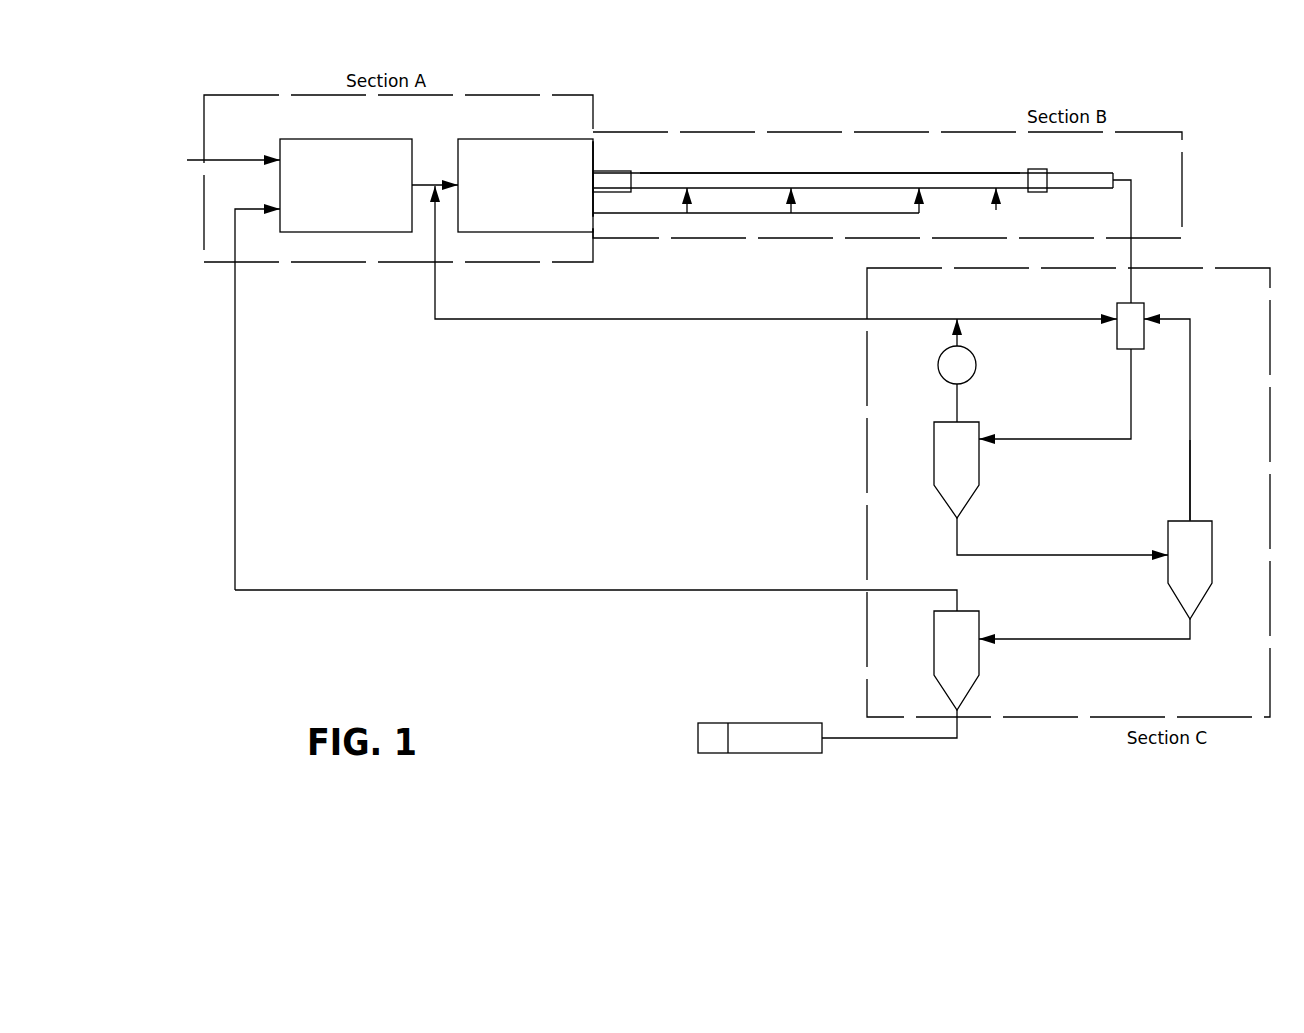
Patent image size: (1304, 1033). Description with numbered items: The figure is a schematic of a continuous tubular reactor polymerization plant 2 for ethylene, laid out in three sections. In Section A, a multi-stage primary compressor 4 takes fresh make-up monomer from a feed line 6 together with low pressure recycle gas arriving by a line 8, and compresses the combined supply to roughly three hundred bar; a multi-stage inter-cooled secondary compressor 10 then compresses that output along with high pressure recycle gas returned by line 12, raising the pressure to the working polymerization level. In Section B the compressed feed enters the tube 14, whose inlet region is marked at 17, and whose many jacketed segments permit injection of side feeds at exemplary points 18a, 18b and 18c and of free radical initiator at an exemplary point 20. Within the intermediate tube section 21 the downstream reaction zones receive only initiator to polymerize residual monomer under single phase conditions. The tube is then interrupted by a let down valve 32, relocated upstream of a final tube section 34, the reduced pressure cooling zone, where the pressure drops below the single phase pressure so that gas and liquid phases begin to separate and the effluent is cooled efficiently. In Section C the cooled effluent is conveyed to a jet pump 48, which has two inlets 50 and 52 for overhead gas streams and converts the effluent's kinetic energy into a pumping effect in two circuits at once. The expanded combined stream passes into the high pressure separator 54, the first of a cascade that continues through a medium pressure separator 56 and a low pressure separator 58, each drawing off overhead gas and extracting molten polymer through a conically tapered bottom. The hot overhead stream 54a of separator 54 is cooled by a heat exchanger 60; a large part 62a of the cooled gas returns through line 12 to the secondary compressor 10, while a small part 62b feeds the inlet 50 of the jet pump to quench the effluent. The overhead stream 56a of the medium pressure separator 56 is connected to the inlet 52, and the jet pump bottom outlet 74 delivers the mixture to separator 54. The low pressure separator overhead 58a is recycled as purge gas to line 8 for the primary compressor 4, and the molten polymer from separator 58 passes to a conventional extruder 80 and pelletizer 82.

The continuous tubular reactor polymerization plant 2 is at (821, 122).
The multi-stage primary compressor 4 is at (340, 195).
The feed line 6 is at (232, 158).
The line 8 is at (238, 344).
The multi-stage inter-cooled secondary compressor 10 is at (514, 195).
The line 12 is at (489, 322).
The tube 14 is at (720, 172).
The conduit inlet section 17 is at (613, 170).
The side feed injection point 18a is at (688, 206).
The side feed injection point 18b is at (792, 206).
The side feed injection point 18c is at (921, 206).
The free radical initiator injection point 20 is at (999, 206).
The intermediate tube section 21 is at (906, 171).
The let down valve 32 is at (1039, 169).
The final tube section 34 is at (1106, 171).
The jet pump 48 is at (1146, 304).
The jet pump inlet 50 is at (1035, 318).
The jet pump inlet 52 is at (1192, 358).
The high pressure separator 54 is at (946, 475).
The hot overhead stream 54a is at (960, 403).
The medium pressure separator 56 is at (1179, 575).
The overhead stream 56a is at (1192, 497).
The low pressure separator 58 is at (946, 665).
The low pressure separator overhead 58a is at (886, 589).
The heat exchanger 60 is at (942, 354).
The large part of cooled gas 62a is at (789, 322).
The small part of cooled overhead 62b is at (975, 318).
The separator bottom stream 74 is at (1128, 352).
The extruder 80 is at (764, 748).
The pelletizer 82 is at (705, 748).